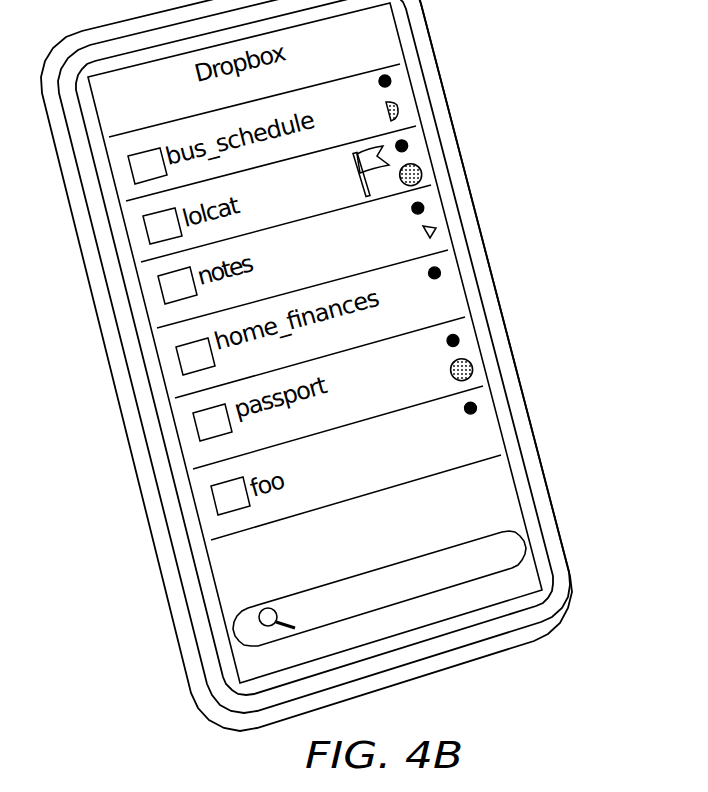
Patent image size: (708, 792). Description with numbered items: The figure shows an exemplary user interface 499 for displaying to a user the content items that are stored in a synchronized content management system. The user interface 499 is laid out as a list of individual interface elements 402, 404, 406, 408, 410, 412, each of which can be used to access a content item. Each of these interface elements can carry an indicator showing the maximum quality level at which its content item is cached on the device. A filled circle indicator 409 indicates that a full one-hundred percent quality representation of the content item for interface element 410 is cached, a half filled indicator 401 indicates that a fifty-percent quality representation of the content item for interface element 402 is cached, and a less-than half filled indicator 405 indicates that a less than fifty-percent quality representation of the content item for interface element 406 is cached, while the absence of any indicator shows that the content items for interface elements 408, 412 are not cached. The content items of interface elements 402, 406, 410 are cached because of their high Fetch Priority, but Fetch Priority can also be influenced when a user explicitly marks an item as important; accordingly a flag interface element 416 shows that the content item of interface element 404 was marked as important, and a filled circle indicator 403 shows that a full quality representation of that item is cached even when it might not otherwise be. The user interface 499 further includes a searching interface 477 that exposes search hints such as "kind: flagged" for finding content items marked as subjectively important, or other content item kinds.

The half filled indicator 401 is at (458, 96).
The interface element 402 is at (480, 52).
The filled circle indicator 403 is at (466, 163).
The interface element 404 is at (494, 125).
The less-than half filled indicator 405 is at (489, 218).
The interface element 406 is at (513, 186).
The interface element 408 is at (530, 250).
The filled circle indicator 409 is at (517, 360).
The interface element 410 is at (544, 321).
The interface element 412 is at (554, 404).
The flag interface element 416 is at (360, 180).
The searching interface 477 is at (438, 584).
The user interface 499 is at (354, 365).